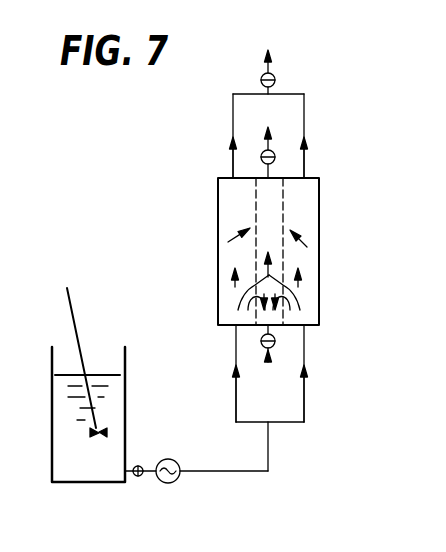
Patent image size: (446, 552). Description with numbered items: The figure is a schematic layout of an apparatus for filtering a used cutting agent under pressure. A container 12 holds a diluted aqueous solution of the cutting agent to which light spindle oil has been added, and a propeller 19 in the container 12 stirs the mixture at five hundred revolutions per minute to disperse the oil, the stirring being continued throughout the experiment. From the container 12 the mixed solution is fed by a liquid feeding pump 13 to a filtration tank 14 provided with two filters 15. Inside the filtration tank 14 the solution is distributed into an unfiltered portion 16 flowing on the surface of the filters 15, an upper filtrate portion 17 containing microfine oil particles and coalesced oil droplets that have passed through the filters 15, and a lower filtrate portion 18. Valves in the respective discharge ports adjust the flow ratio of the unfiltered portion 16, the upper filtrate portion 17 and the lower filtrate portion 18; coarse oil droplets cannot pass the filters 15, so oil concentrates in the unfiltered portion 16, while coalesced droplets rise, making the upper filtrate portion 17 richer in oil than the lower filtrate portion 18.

The container 12 is at (108, 483).
The liquid feeding pump 13 is at (173, 484).
The filtration tank 14 is at (319, 215).
The filters 15 is at (256, 213).
The unfiltered portion 16 is at (271, 58).
The upper filtrate portion 17 is at (272, 136).
The lower filtrate portion 18 is at (272, 360).
The propeller 19 is at (75, 308).